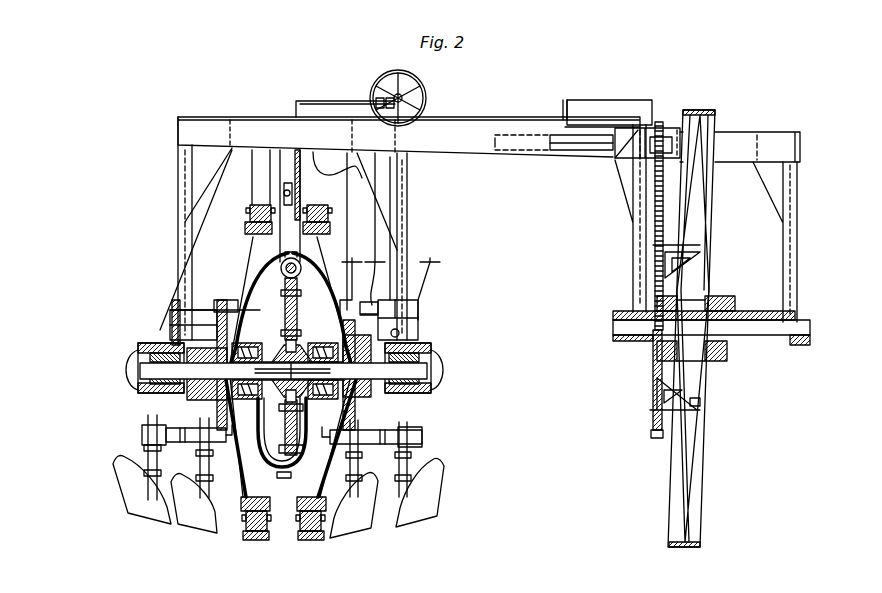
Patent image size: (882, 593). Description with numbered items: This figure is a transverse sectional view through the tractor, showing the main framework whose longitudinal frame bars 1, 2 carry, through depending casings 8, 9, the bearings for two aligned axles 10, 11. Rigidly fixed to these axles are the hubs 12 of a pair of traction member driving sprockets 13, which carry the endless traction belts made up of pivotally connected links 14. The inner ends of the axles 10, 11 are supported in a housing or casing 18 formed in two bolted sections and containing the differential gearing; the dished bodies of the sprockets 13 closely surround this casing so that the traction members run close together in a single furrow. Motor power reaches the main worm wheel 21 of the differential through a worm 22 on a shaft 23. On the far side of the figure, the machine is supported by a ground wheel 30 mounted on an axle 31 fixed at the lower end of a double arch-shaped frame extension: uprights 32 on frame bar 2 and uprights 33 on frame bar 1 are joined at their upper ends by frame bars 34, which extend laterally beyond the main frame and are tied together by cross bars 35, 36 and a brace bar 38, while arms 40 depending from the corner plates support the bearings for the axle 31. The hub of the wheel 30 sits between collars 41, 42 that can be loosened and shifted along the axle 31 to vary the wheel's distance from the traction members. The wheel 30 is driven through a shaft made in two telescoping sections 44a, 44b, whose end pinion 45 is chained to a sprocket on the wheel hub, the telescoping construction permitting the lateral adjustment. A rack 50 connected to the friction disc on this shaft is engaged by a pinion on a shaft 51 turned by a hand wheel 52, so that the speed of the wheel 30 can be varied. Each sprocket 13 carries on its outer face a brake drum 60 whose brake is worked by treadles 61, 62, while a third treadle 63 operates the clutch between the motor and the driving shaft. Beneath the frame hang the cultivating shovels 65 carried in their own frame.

The frame bar 1 is at (400, 334).
The frame bar 2 is at (170, 336).
The casing 8 is at (155, 393).
The casing 9 is at (418, 395).
The axle 10 is at (215, 385).
The axle 11 is at (364, 392).
The hub 12 is at (192, 395).
The traction member driving sprocket 13 is at (244, 228).
The link 14 is at (256, 206).
The housing or casing 18 is at (283, 293).
The main worm wheel 21 is at (215, 324).
The worm 22 is at (282, 264).
The shaft 23 is at (282, 276).
The ground wheel 30 is at (701, 510).
The axle 31 is at (780, 336).
The upright 32 is at (400, 222).
The upright 33 is at (176, 222).
The frame bar 34 is at (409, 137).
The cross bar 35 is at (630, 150).
The cross bar 36 is at (800, 150).
The brace bar 38 is at (610, 98).
The arm 40 is at (633, 252).
The collar 41 is at (640, 338).
The collar 42 is at (748, 310).
The telescoping shaft section 44a is at (520, 152).
The telescoping shaft section 44b is at (578, 152).
The pinion 45 is at (662, 127).
The rack 50 is at (562, 112).
The shaft 51 is at (405, 98).
The hand wheel 52 is at (372, 80).
The brake drum 60 is at (222, 313).
The treadle 61 is at (345, 262).
The treadle 62 is at (362, 178).
The treadle 63 is at (427, 262).
The cultivating shovel 65 is at (144, 510).